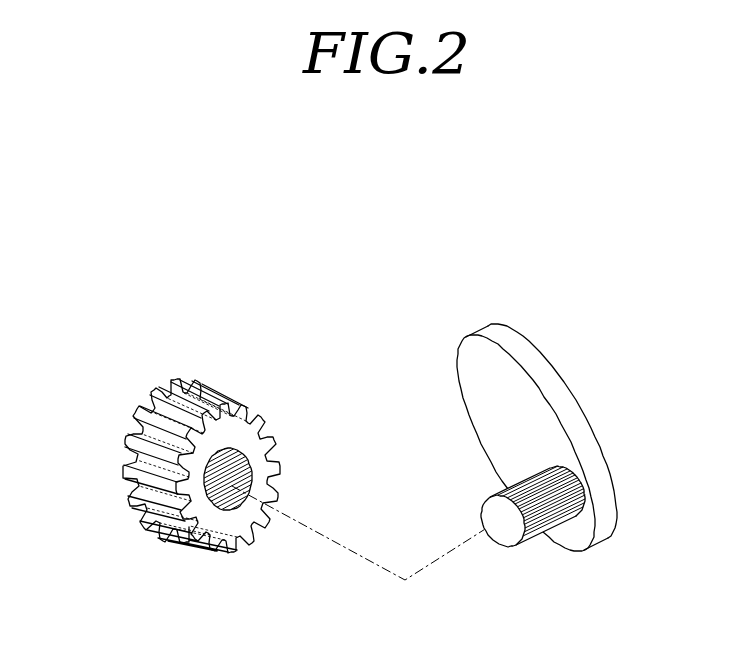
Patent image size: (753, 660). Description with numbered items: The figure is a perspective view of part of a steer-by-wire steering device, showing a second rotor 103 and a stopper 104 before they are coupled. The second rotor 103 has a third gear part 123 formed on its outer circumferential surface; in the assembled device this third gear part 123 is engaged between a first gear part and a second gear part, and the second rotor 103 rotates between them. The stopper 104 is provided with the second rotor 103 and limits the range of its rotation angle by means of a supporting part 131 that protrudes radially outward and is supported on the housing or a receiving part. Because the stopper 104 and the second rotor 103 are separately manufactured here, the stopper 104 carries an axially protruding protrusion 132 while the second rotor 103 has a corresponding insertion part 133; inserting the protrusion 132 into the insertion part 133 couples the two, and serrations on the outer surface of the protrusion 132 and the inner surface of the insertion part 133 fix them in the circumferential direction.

The second rotor 103 is at (180, 418).
The stopper 104 is at (564, 427).
The third gear part 123 is at (148, 475).
The supporting part 131 is at (500, 342).
The protrusion 132 is at (551, 528).
The insertion part 133 is at (237, 497).